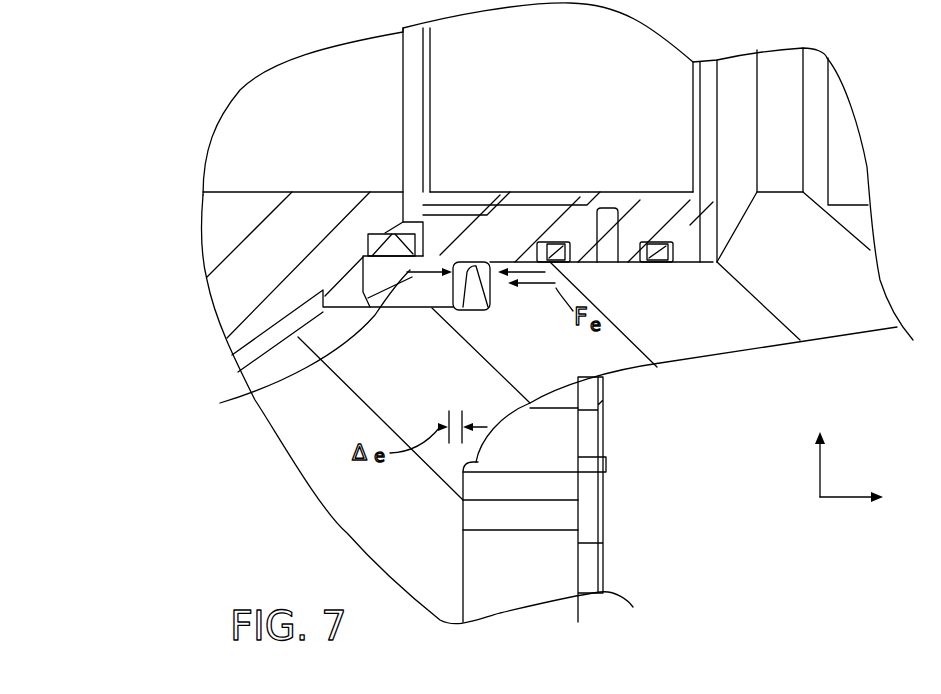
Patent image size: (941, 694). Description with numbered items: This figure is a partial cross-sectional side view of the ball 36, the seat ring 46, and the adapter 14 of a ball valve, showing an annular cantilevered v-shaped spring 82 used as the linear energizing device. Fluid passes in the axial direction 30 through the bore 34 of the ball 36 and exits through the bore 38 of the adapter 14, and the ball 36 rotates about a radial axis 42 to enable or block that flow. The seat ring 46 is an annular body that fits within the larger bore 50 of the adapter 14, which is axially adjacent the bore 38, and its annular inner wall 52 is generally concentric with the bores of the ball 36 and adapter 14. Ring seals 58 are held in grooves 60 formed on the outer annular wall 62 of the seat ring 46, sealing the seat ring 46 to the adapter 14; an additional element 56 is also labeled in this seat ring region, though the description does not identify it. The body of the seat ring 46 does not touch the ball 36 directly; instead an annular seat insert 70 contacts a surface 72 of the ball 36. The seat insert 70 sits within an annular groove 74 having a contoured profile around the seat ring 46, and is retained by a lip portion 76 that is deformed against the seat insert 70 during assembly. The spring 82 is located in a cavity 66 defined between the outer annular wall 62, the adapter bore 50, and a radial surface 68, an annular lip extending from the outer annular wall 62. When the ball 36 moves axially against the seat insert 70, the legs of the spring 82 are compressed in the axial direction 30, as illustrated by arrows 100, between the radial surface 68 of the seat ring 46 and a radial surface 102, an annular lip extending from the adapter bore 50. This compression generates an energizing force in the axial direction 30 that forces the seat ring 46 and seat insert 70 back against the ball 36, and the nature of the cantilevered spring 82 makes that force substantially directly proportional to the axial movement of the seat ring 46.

The adapter 14 is at (728, 338).
The axial direction 30 is at (847, 498).
The bore of the ball 34 is at (237, 192).
The ball 36 is at (208, 243).
The bore of the adapter 38 is at (783, 193).
The radial axis 42 is at (820, 468).
The seat ring 46 is at (690, 223).
The bore of the adapter 50 is at (607, 263).
The annular inner wall of the seat ring 52 is at (571, 192).
The seal carrier plate 56 is at (490, 215).
The ring seal 58 is at (610, 208).
The groove 60 is at (548, 232).
The outer annular wall of the seat ring 62 is at (500, 260).
The cavity 66 is at (472, 300).
The radial surface 68 is at (452, 284).
The seat insert 70 is at (392, 262).
The surface of the ball 72 is at (343, 267).
The groove 74 is at (256, 395).
The lip portion 76 is at (397, 223).
The cantilevered v-shaped spring 82 is at (488, 287).
The arrows 100 is at (545, 222).
The radial surface 102 is at (490, 292).